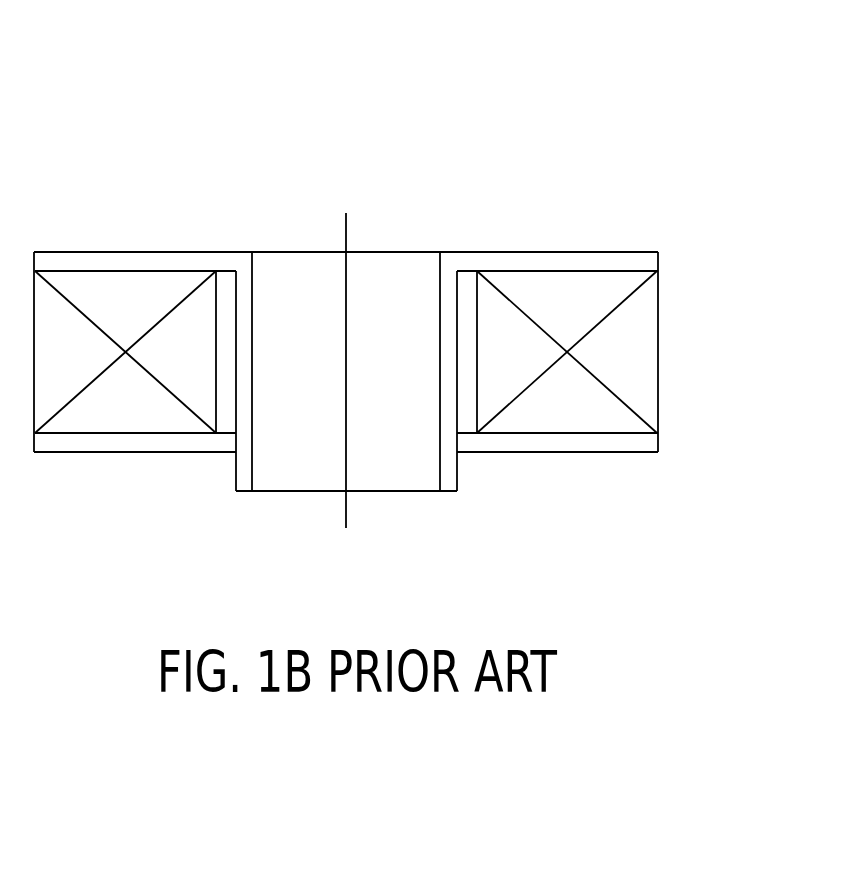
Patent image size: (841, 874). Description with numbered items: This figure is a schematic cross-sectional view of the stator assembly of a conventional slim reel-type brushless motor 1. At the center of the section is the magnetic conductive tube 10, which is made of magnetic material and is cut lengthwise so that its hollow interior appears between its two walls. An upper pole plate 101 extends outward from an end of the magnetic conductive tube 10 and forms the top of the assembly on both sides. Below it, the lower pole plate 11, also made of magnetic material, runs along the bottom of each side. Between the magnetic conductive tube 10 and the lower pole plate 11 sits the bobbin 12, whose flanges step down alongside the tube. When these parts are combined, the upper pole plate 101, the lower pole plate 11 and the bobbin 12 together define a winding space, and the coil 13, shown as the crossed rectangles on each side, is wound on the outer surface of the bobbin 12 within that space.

The brushless motor 1 is at (733, 70).
The upper pole plate 101 is at (591, 252).
The lower pole plate 11 is at (657, 452).
The coil 13 is at (657, 328).
The bobbin 12 is at (477, 353).
The magnetic conductive tube 10 is at (457, 472).